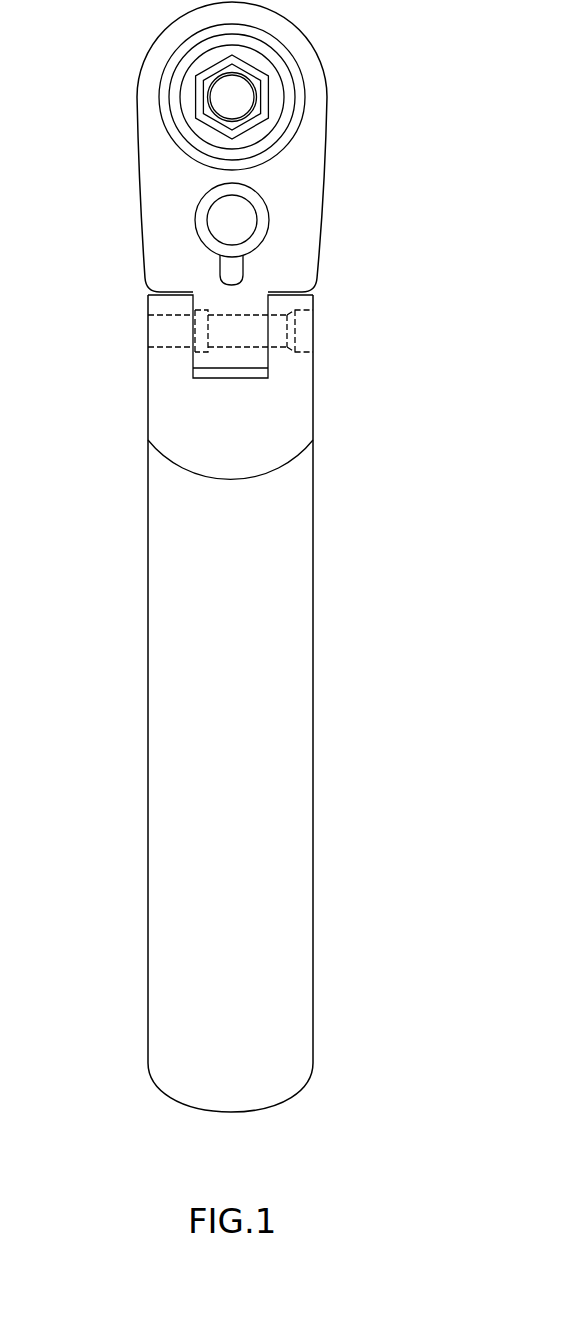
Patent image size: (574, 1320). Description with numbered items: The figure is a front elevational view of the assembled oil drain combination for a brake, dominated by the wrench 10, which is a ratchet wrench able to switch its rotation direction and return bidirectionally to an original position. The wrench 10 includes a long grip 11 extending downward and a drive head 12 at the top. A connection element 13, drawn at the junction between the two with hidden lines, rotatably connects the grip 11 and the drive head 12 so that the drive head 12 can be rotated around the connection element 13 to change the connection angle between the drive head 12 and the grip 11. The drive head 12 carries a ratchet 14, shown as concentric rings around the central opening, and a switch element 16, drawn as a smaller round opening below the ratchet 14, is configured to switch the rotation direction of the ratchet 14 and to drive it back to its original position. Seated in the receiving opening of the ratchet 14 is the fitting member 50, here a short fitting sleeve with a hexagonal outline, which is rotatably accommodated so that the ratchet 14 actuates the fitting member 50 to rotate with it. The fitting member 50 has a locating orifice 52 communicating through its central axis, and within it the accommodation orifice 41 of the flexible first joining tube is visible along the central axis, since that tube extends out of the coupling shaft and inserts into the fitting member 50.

The wrench 10 is at (245, 557).
The grip 11 is at (295, 528).
The drive head 12 is at (325, 145).
The connection element 13 is at (237, 350).
The ratchet 14 is at (298, 88).
The switch element 16 is at (272, 213).
The accommodation orifice 41 is at (212, 102).
The fitting member 50 is at (257, 62).
The locating orifice 52 is at (207, 80).